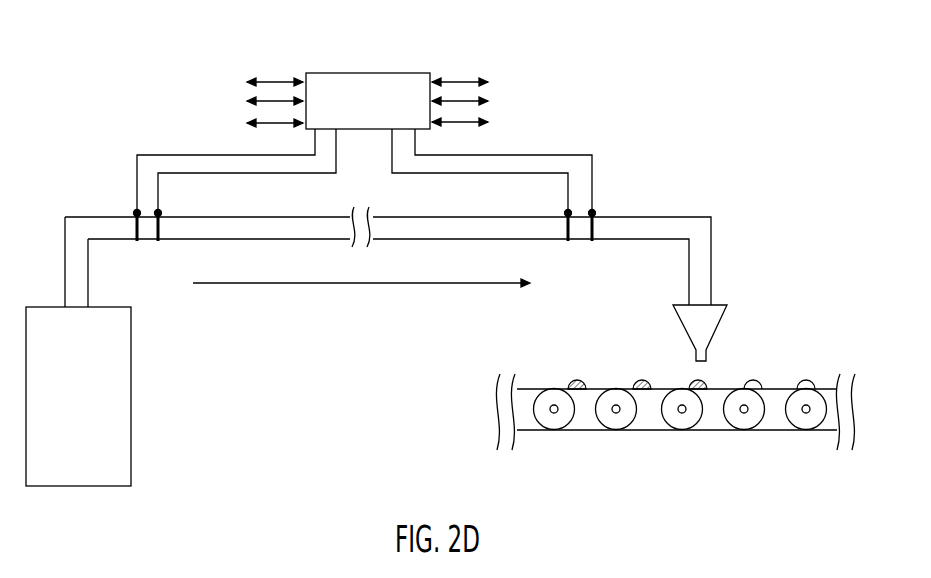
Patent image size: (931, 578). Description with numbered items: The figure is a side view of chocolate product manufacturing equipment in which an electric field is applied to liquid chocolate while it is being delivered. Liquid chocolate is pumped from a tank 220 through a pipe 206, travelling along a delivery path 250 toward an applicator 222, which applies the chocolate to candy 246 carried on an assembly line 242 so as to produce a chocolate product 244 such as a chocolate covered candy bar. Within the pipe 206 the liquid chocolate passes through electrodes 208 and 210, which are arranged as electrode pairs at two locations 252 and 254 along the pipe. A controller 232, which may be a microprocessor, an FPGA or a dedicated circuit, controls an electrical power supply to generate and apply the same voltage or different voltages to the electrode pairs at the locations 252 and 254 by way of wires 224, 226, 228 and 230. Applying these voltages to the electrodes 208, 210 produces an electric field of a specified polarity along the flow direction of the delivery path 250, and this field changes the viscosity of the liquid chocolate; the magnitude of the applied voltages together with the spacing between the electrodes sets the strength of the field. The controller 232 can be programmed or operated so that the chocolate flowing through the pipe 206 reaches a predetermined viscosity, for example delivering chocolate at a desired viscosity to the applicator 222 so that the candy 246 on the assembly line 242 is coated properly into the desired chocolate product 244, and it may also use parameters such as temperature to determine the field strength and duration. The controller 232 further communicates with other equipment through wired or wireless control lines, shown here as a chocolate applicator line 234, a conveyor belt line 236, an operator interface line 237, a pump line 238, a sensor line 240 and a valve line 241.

The pipe 206 is at (88, 288).
The electrode 208 is at (137, 244).
The electrode 210 is at (158, 244).
The tank 220 is at (42, 307).
The applicator 222 is at (720, 305).
The wire 224 is at (137, 185).
The wire 226 is at (158, 185).
The wire 228 is at (568, 182).
The wire 230 is at (592, 178).
The controller 232 is at (375, 73).
The chocolate applicator line 234 is at (270, 82).
The conveyor belt line 236 is at (262, 101).
The operator interface line 237 is at (265, 123).
The pump line 238 is at (470, 82).
The sensor line 240 is at (470, 100).
The valve line 241 is at (470, 120).
The assembly line 242 is at (648, 436).
The chocolate product 244 is at (695, 380).
The candy 246 is at (808, 377).
The delivery path 250 is at (420, 284).
The electrode pair location 252 is at (166, 209).
The electrode pair location 254 is at (558, 207).